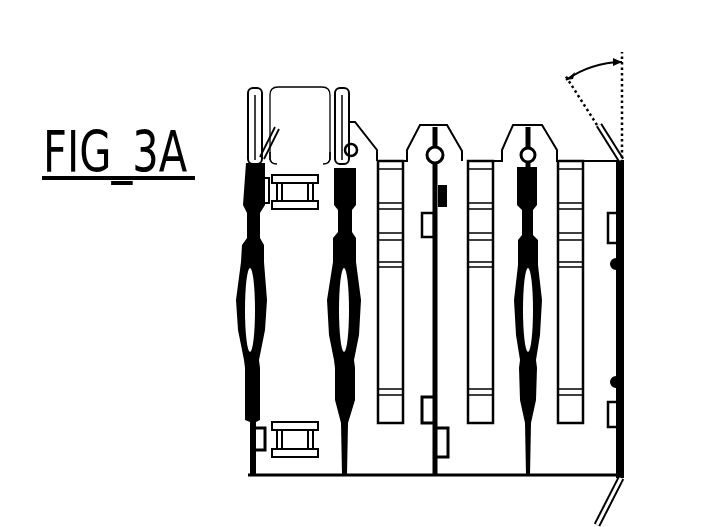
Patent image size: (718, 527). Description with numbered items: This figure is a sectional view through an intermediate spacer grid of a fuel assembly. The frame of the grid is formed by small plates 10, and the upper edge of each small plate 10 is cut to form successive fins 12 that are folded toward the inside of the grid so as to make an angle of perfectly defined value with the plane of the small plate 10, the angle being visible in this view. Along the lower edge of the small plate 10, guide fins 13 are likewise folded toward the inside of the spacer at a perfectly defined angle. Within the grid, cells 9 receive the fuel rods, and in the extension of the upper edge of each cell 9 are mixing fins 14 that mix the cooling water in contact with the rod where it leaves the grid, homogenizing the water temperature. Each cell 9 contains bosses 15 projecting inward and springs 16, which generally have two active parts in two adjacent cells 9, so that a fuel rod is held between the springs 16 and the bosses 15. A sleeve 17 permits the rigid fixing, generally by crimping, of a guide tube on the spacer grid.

The cell 9 is at (526, 484).
The small plate 10 is at (622, 268).
The fin 12 is at (612, 137).
The guide fin 13 is at (614, 494).
The mixing fin 14 is at (510, 148).
The boss 15 is at (295, 236).
The spring 16 is at (393, 327).
The sleeve 17 is at (293, 107).